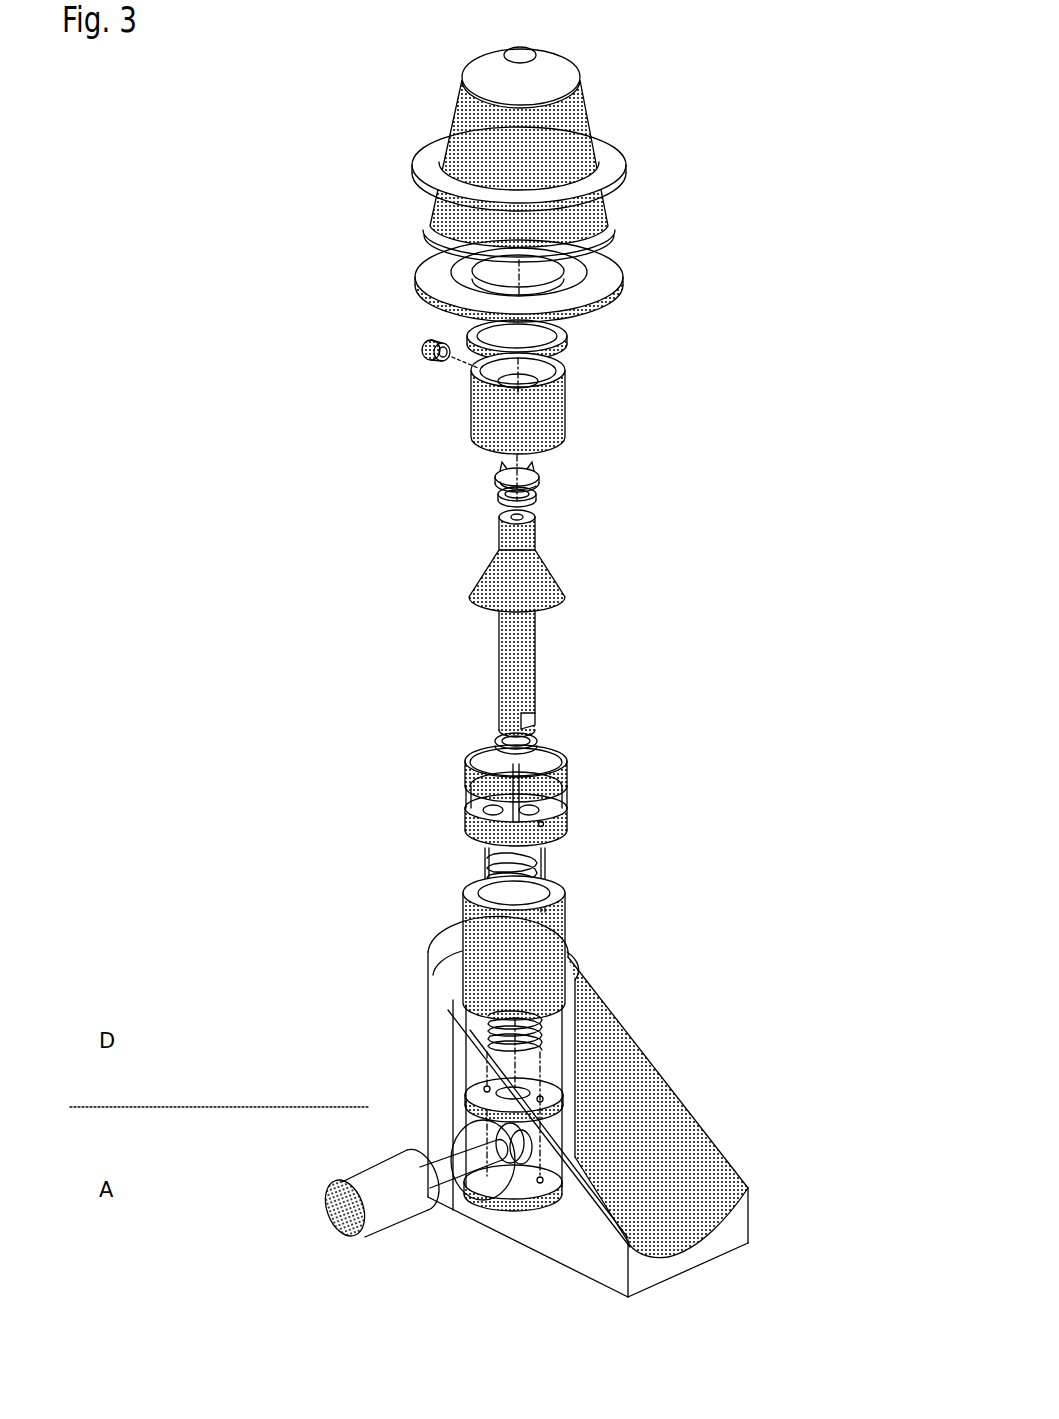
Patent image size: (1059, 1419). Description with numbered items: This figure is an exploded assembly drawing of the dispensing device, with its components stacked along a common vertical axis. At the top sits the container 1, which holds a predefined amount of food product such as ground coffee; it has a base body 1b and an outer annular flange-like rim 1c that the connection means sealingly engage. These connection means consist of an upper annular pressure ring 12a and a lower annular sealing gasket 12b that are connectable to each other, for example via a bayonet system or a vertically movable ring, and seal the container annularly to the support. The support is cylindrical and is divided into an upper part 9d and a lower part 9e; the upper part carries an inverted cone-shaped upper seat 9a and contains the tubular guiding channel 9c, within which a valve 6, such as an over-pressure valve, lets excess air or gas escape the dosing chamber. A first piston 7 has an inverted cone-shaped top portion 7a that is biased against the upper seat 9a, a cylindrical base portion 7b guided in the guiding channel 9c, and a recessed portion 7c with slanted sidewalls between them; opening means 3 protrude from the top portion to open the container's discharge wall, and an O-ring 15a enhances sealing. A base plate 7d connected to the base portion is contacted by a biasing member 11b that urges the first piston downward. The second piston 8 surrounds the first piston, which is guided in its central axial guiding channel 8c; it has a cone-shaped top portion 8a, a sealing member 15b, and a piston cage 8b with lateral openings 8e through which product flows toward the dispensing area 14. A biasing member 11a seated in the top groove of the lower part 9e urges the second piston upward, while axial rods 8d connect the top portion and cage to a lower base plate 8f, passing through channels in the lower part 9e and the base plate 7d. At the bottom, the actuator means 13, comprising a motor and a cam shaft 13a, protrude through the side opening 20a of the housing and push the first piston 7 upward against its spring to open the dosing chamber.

The container 1 is at (497, 88).
The base body 1b is at (558, 130).
The flange-like rim 1c is at (617, 220).
The upper annular pressure ring 12a is at (600, 180).
The lower annular sealing gasket 12b is at (615, 277).
The upper seat 9a is at (575, 337).
The guiding channel 9c is at (519, 370).
The upper part of the support 9d is at (562, 408).
The valve 6 is at (405, 345).
The opening means 3 is at (508, 477).
The top portion 7a is at (500, 483).
The O-ring 15a is at (540, 497).
The recessed portion 7c is at (540, 520).
The top portion 8a is at (540, 582).
The first piston 7 is at (525, 639).
The base portion 7b is at (525, 705).
The sealing member 15b is at (485, 735).
The piston cage 8b is at (560, 782).
The lateral openings 8e is at (478, 795).
The central axial guiding channel 8c is at (465, 815).
The second piston 8 is at (563, 826).
The axial rods 8d is at (538, 860).
The biasing member 11a is at (520, 889).
The lower part of the support 9e is at (520, 938).
The biasing member 11b is at (520, 1035).
The base plate 7d is at (560, 1108).
The dispensing area 14 is at (650, 1145).
The lower base plate 8f is at (560, 1182).
The cam shaft 13a is at (480, 1147).
The actuator means 13 is at (390, 1183).
The side opening 20a is at (445, 1183).